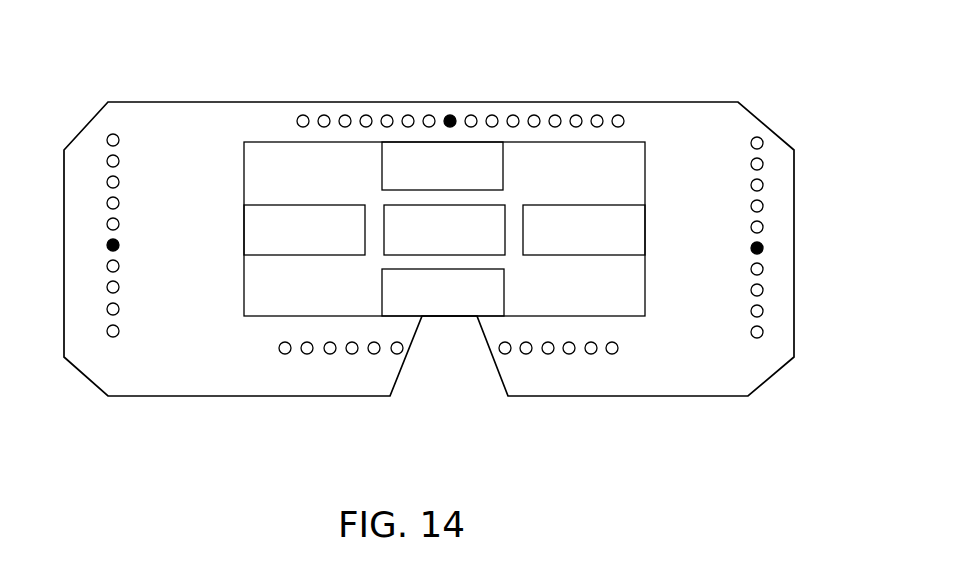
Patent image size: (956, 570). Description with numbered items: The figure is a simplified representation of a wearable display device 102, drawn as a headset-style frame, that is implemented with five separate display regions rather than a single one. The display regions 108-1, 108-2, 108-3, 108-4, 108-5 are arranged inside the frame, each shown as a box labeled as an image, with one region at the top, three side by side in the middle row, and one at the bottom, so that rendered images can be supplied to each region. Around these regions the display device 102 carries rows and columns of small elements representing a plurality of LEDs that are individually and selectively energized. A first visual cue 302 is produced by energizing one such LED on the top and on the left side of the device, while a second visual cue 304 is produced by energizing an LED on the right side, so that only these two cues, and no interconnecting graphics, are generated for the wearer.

The display device 102 is at (698, 102).
The first visual cue 302 is at (450, 114).
The second visual cue 304 is at (764, 248).
The display region 108-1 is at (503, 165).
The display region 108-2 is at (585, 255).
The display region 108-3 is at (382, 277).
The display region 108-4 is at (288, 204).
The display region 108-5 is at (505, 228).